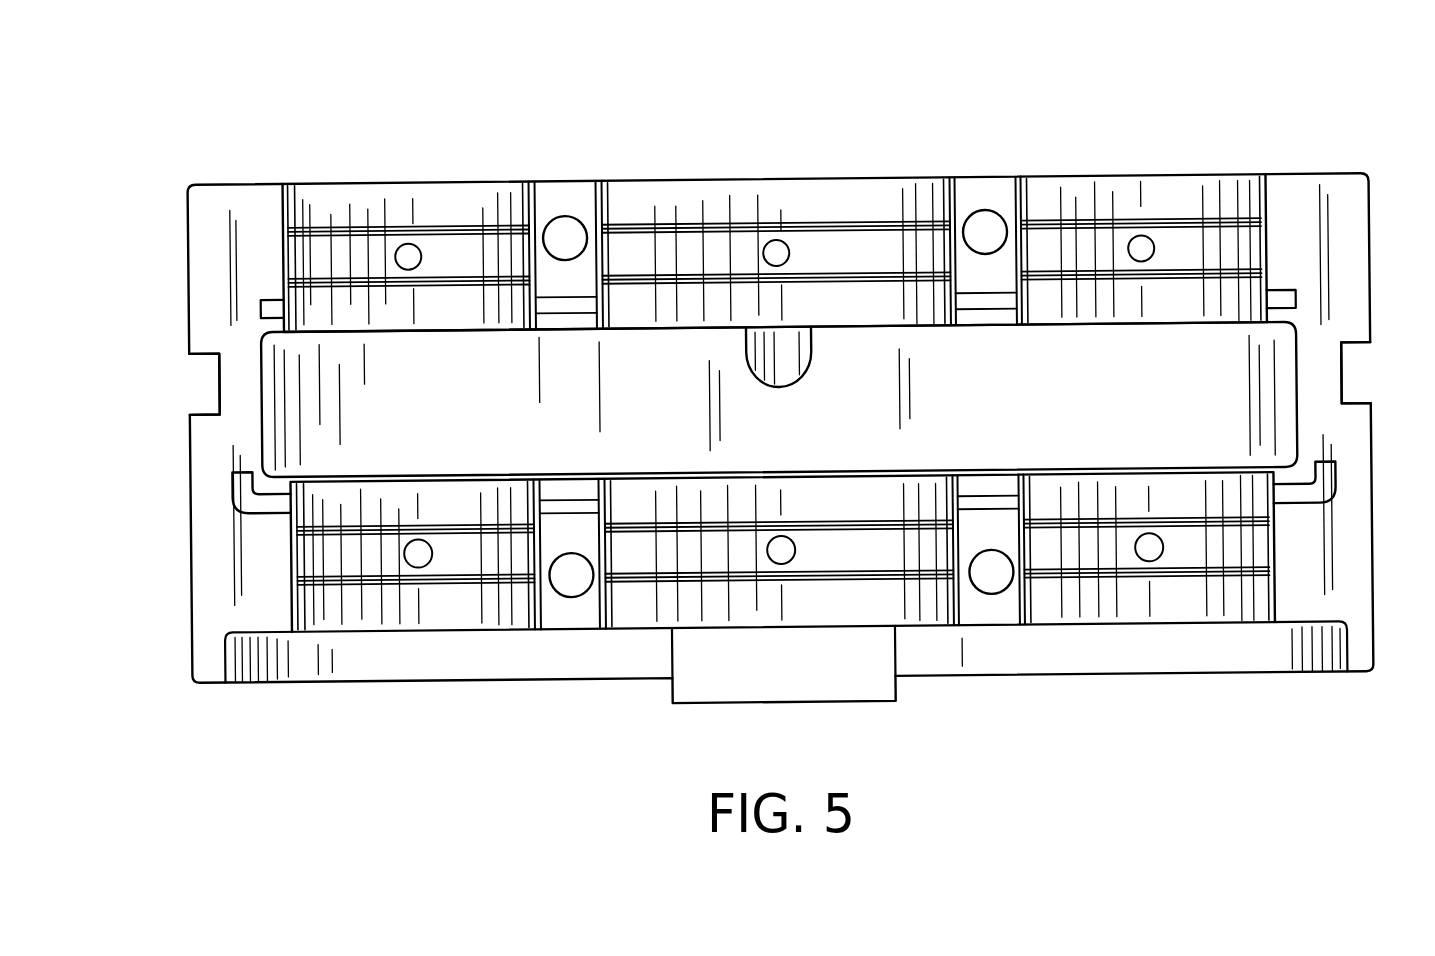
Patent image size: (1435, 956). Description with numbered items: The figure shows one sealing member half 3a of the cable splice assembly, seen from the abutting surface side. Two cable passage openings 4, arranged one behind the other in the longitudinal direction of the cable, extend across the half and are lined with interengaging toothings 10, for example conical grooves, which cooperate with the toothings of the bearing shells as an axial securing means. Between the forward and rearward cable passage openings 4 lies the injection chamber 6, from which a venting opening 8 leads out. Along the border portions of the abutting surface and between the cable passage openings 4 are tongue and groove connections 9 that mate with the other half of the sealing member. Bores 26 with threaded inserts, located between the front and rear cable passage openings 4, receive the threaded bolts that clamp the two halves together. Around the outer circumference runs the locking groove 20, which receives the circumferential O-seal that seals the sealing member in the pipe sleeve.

The sealing member half 3a is at (1295, 177).
The cable passage openings 4 is at (1021, 177).
The injection chamber 6 is at (1190, 434).
The venting opening 8 is at (793, 358).
The tongue and groove connections 9 is at (250, 492).
The interengaging toothings 10 is at (344, 279).
The locking groove 20 is at (208, 385).
The bores 26 is at (573, 245).